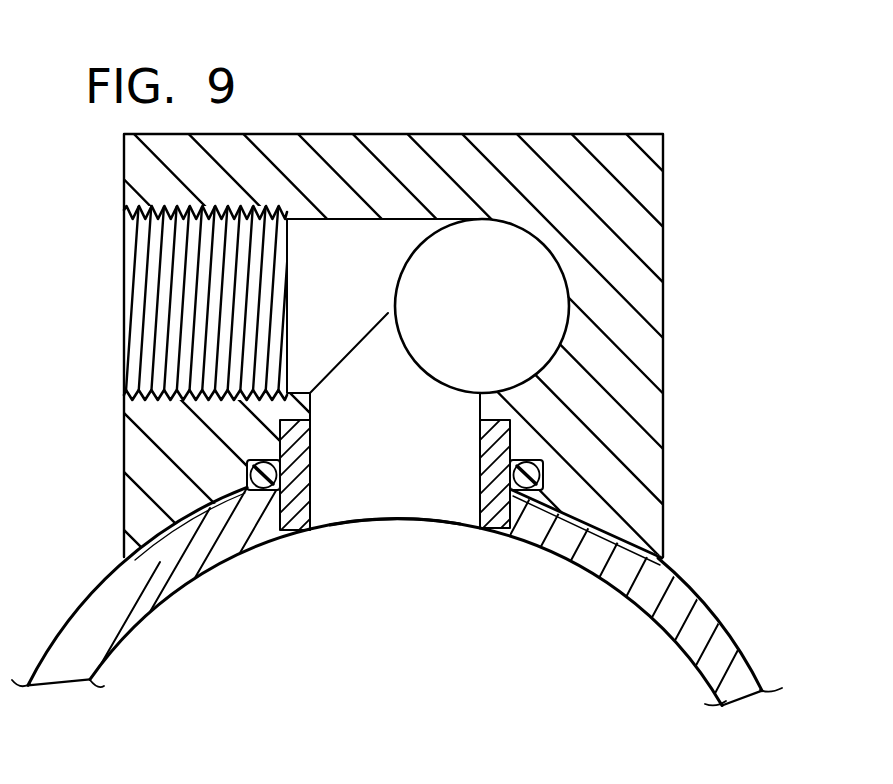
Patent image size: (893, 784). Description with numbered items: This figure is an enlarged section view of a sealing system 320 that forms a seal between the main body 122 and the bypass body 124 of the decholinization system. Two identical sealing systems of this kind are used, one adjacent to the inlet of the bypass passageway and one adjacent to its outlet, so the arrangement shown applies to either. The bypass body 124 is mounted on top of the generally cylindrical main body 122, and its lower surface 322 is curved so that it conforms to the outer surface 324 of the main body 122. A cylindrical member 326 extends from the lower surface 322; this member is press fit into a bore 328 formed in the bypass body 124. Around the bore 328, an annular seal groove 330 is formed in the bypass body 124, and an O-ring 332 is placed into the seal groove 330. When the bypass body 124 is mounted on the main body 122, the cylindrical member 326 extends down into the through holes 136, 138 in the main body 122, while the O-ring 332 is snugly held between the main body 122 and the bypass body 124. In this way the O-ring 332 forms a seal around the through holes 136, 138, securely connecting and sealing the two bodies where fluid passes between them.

The sealing system 320 is at (705, 209).
The bypass body 124 is at (666, 332).
The main body 122 is at (738, 637).
The lower surface 322 is at (657, 563).
The outer surface 324 is at (690, 586).
The cylindrical member 326 is at (481, 481).
The bore 328 is at (300, 500).
The annular seal groove 330 is at (252, 498).
The O-ring 332 is at (262, 494).
The through hole 136 is at (438, 500).
The through hole 138 is at (438, 500).